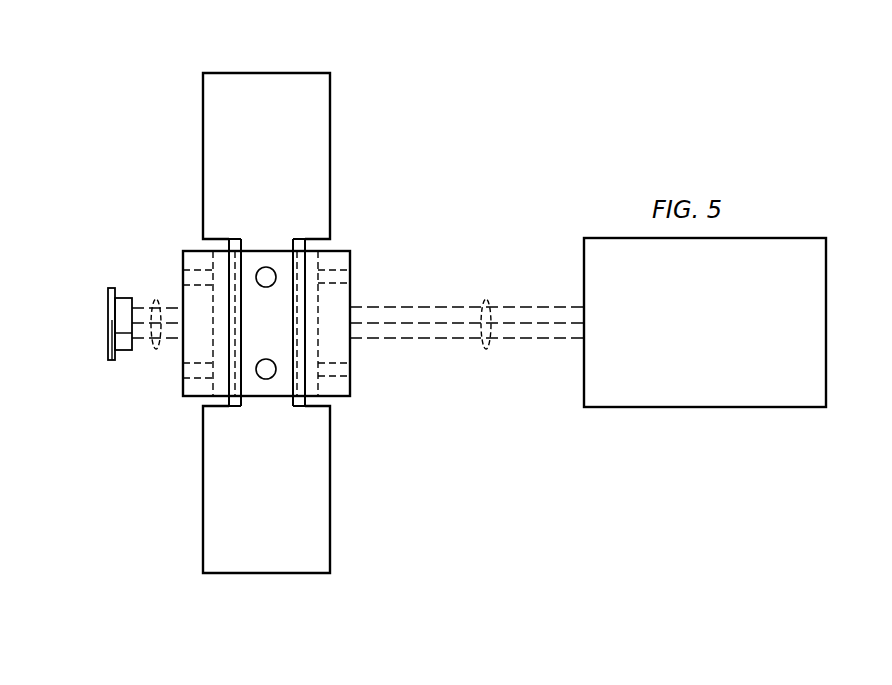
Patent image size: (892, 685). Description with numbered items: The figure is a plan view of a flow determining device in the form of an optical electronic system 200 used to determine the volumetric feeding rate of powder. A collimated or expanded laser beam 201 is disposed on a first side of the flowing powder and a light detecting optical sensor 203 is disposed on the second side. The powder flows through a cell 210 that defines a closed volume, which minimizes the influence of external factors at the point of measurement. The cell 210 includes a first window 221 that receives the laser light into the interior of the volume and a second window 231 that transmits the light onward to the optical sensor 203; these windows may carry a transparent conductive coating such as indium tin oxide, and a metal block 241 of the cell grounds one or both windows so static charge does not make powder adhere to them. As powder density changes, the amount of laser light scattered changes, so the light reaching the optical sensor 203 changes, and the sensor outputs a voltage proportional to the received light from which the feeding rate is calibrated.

The optical electronic system 200 is at (429, 323).
The laser beam 201 is at (155, 299).
The optical sensor 203 is at (107, 315).
The cell 210 is at (283, 171).
The first window 221 is at (318, 343).
The second window 231 is at (231, 380).
The metal block 241 is at (283, 505).